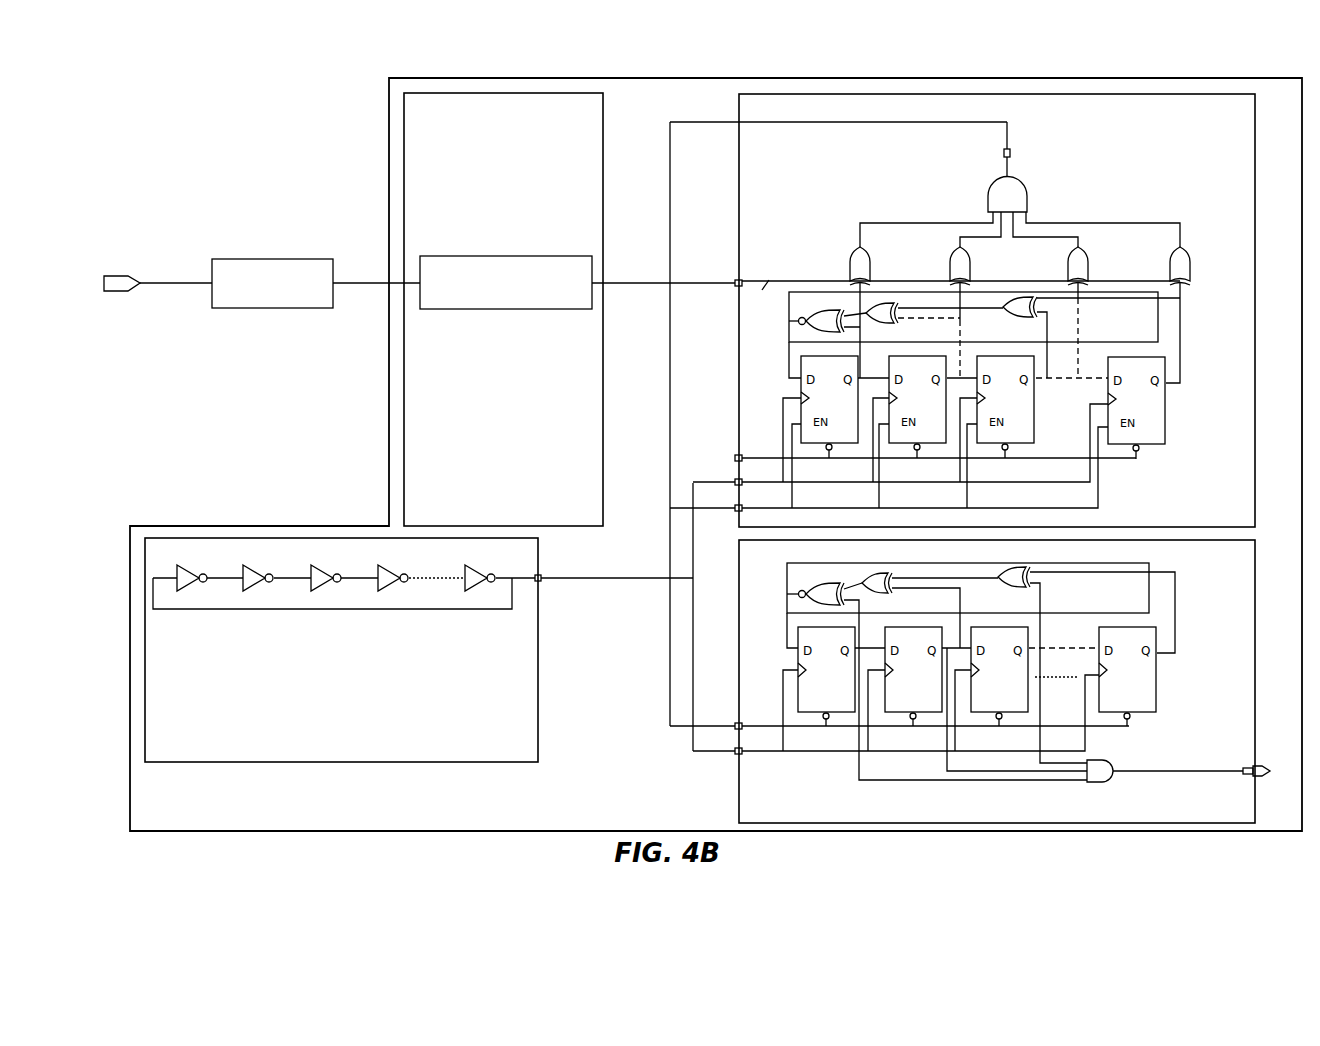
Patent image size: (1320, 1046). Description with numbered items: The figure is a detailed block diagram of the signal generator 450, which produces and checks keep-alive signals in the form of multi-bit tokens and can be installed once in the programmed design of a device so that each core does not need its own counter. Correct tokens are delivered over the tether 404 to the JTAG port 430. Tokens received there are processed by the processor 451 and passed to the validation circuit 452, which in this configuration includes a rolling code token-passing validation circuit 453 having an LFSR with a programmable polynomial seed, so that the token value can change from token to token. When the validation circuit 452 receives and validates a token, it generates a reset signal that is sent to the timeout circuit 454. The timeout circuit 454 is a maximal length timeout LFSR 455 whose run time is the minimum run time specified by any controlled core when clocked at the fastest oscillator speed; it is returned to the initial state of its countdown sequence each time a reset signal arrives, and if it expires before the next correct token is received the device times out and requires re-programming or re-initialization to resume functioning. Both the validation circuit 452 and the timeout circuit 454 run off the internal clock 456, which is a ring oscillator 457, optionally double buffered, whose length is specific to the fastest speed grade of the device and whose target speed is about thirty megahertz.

The tether 404 is at (158, 283).
The JTAG port 430 is at (296, 308).
The signal generator 450 is at (389, 140).
The processor 451 is at (604, 178).
The validation circuit 452 is at (1255, 217).
The rolling code token-passing validation circuit 453 is at (1186, 407).
The timeout circuit 454 is at (1255, 613).
The maximal length timeout LFSR 455 is at (1184, 669).
The internal clock 456 is at (538, 700).
The ring oscillator 457 is at (212, 625).